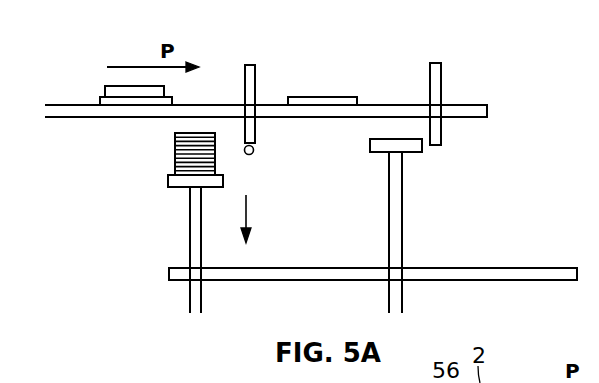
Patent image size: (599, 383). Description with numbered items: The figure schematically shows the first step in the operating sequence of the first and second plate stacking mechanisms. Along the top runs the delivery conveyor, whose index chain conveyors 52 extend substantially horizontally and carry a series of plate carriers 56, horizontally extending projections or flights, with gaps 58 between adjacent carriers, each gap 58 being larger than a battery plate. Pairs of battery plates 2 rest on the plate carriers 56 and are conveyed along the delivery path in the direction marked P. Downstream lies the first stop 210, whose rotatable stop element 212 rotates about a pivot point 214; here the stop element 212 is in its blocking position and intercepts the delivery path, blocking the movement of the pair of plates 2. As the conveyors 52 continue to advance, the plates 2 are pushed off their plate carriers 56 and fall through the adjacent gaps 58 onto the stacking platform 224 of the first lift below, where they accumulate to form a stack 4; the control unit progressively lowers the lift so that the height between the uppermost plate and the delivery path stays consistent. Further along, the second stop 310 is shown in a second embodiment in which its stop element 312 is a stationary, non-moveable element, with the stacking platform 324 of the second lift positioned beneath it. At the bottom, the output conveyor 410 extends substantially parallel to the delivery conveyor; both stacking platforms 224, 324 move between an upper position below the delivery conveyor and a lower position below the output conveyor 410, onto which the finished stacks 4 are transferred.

The battery plate 2 is at (132, 86).
The stack 4 is at (182, 140).
The index chain conveyor 52 is at (70, 117).
The plate carrier 56 is at (100, 97).
The gap 58 is at (207, 104).
The first stop 210 is at (250, 65).
The rotatable stop element 212 is at (248, 85).
The pivot point 214 is at (253, 152).
The stacking platform 224 is at (173, 182).
The second stop 310 is at (438, 63).
The stop element 312 is at (438, 98).
The stacking platform 324 is at (420, 146).
The output conveyor 410 is at (510, 268).